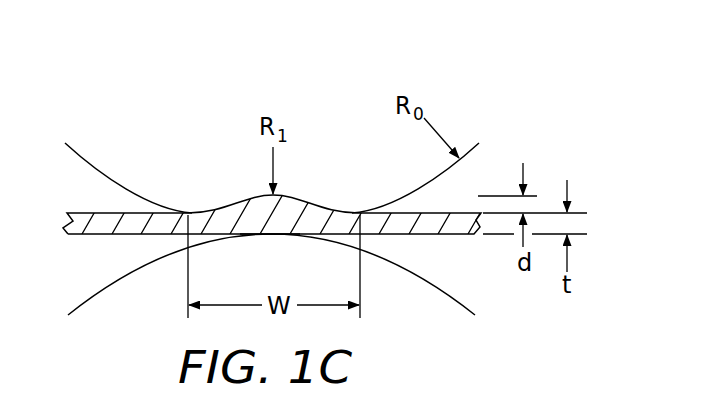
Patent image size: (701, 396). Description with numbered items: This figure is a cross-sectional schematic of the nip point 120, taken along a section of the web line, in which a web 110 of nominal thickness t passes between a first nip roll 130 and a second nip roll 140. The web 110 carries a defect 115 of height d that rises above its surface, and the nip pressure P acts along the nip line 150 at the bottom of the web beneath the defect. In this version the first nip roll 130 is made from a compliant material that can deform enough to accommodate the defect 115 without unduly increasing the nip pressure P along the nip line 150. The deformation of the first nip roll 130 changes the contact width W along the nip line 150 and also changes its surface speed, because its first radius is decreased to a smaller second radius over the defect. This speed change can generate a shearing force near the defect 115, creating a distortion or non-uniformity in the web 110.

The web 110 is at (83, 225).
The defect 115 is at (238, 206).
The nip point 120 is at (531, 126).
The first nip roll 130 is at (233, 129).
The second nip roll 140 is at (266, 282).
The nip line 150 is at (270, 237).